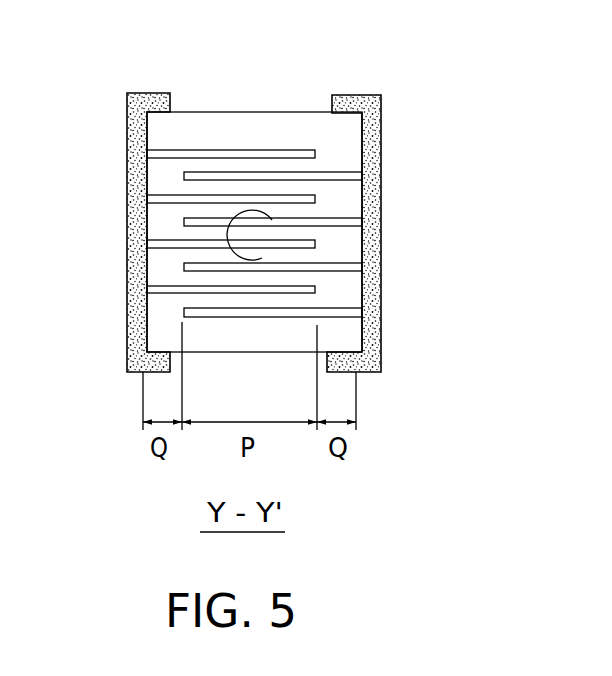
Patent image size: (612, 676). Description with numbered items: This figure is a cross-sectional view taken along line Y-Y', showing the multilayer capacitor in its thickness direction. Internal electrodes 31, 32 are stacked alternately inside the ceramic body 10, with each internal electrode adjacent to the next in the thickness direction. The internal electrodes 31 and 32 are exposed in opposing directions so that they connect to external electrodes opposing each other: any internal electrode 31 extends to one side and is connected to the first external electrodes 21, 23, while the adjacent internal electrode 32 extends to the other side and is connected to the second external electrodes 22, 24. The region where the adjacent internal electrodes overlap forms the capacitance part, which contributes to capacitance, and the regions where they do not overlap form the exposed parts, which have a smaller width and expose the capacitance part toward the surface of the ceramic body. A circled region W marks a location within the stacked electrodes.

The ceramic body 10 is at (254, 232).
The first external electrode 21 is at (155, 187).
The second external electrode 22 is at (351, 187).
The first external electrode 23 is at (157, 93).
The second external electrode 24 is at (360, 95).
The internal electrode 31 is at (150, 156).
The internal electrode 32 is at (356, 177).
The overlap region W is at (275, 234).